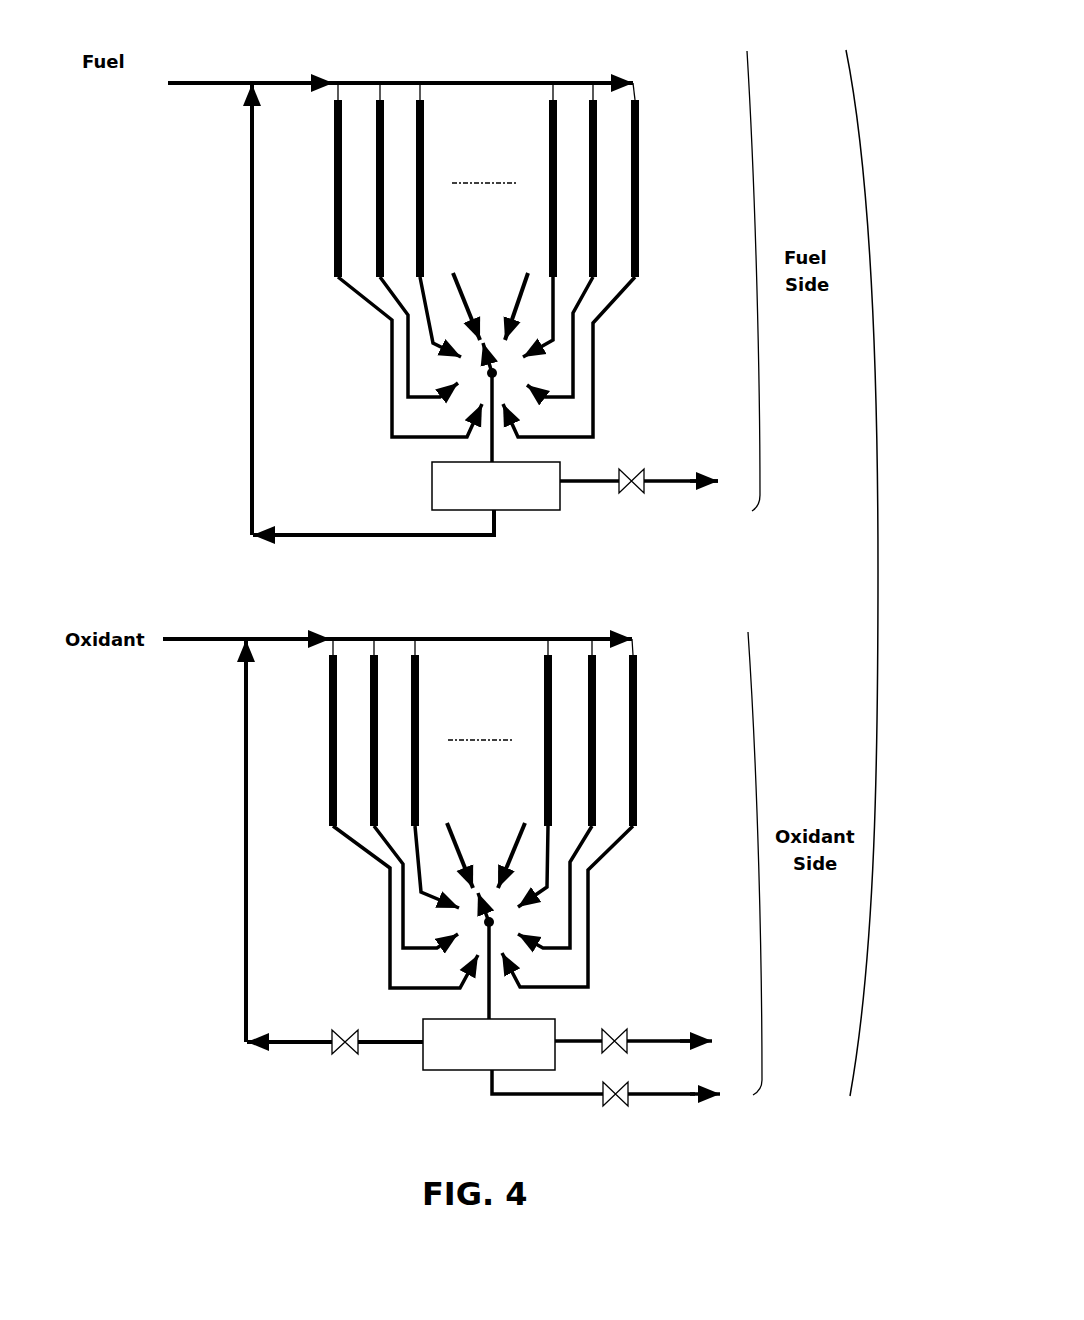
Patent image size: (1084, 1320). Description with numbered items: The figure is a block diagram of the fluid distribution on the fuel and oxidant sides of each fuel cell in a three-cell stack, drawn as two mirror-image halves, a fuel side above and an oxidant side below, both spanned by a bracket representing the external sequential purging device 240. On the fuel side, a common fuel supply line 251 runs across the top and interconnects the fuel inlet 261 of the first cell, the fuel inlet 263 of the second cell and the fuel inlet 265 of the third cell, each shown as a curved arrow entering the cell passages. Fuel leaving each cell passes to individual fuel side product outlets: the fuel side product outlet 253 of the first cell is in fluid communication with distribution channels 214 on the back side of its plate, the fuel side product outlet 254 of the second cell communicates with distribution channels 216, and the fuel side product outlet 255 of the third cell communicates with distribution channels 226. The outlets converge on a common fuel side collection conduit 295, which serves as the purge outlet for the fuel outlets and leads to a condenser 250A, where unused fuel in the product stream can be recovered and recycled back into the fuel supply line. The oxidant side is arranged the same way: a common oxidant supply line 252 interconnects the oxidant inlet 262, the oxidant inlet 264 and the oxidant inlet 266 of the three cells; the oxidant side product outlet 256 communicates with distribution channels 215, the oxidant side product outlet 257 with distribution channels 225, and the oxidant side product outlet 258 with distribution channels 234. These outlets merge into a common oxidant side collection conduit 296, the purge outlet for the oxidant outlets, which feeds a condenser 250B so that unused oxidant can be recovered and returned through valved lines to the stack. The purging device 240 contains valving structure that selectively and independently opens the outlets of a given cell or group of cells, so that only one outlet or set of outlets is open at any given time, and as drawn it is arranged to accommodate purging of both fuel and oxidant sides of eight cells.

The distribution channels 214 is at (334, 153).
The distribution channels 216 is at (376, 186).
The distribution channels 226 is at (425, 153).
The distribution channels 215 is at (329, 706).
The distribution channels 225 is at (370, 741).
The distribution channels 234 is at (420, 709).
The external sequential purging device 240 is at (883, 573).
The condenser 250A is at (540, 511).
The condenser 250B is at (442, 1075).
The common fuel supply line 251 is at (205, 82).
The common oxidant supply line 252 is at (201, 638).
The fuel side product outlet 253 is at (348, 289).
The fuel side product outlet 254 is at (386, 291).
The fuel side product outlet 255 is at (419, 295).
The oxidant side product outlet 256 is at (342, 840).
The oxidant side product outlet 257 is at (379, 844).
The oxidant side product outlet 258 is at (414, 848).
The fuel inlet 261 is at (345, 95).
The fuel inlet 263 is at (388, 95).
The fuel inlet 265 is at (431, 94).
The oxidant inlet 262 is at (340, 650).
The oxidant inlet 264 is at (383, 650).
The oxidant inlet 266 is at (427, 650).
The common fuel side collection conduit 295 is at (489, 451).
The common oxidant side collection conduit 296 is at (486, 1003).